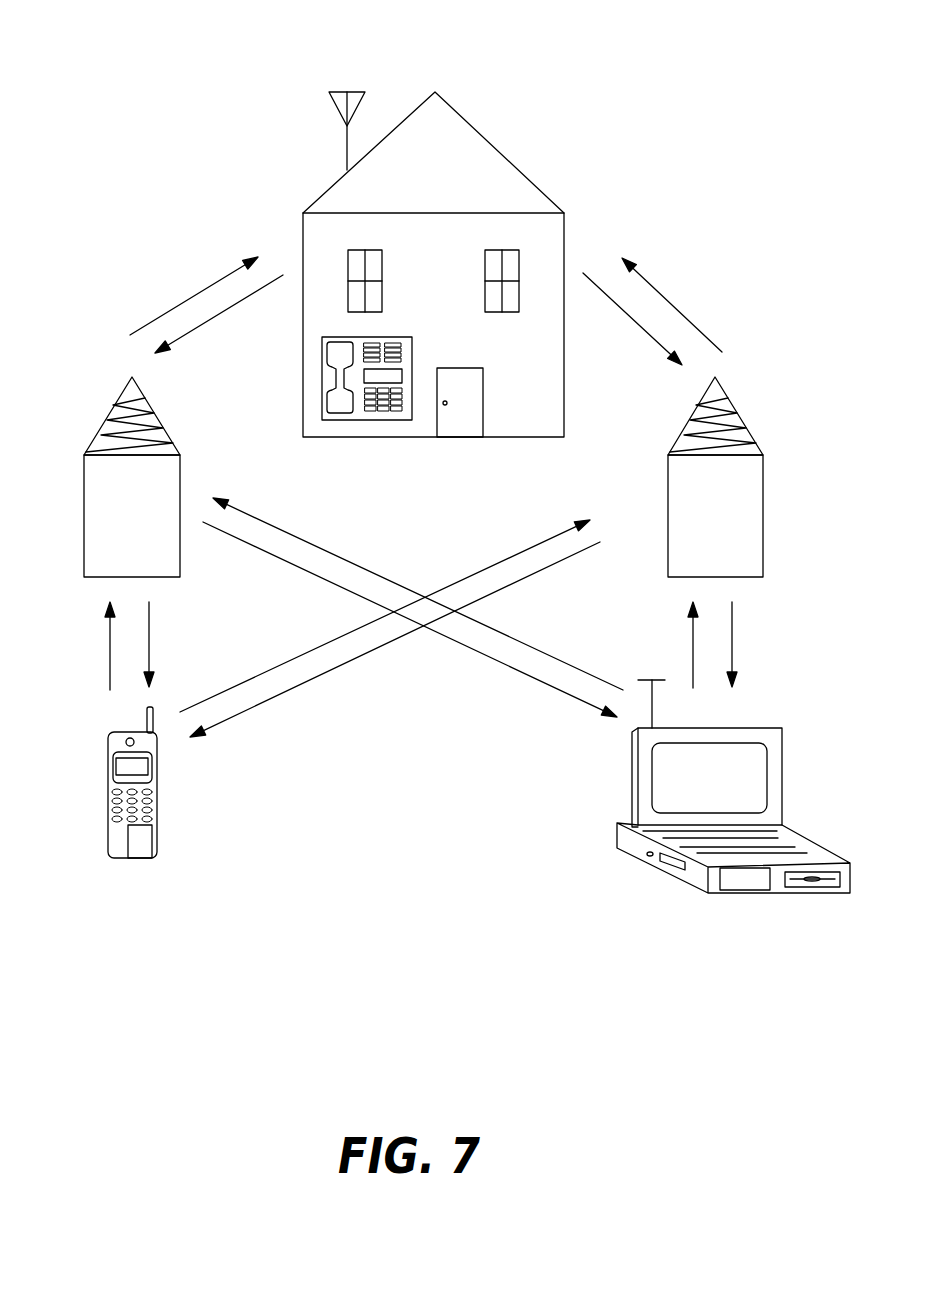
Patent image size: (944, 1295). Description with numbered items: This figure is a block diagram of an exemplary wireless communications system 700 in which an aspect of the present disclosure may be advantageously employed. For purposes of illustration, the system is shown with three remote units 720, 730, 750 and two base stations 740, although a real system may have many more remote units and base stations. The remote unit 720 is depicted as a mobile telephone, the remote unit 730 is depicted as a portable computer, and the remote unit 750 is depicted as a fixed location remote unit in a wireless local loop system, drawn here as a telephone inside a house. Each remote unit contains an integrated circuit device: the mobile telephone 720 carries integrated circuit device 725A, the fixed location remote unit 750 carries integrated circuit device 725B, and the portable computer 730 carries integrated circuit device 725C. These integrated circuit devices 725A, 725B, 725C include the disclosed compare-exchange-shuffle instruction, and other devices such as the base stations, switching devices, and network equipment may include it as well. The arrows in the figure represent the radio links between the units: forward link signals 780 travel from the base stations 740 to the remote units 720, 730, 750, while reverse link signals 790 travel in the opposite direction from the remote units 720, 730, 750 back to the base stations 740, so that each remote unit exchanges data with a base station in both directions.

The wireless communications system 700 is at (149, 66).
The remote unit 720 is at (108, 742).
The integrated circuit device 725A is at (138, 850).
The integrated circuit device 725B is at (402, 377).
The integrated circuit device 725C is at (747, 880).
The remote unit 730 is at (750, 728).
The base station 740 is at (110, 418).
The remote unit 750 is at (322, 380).
The forward link signal 780 is at (199, 293).
The reverse link signal 790 is at (223, 312).